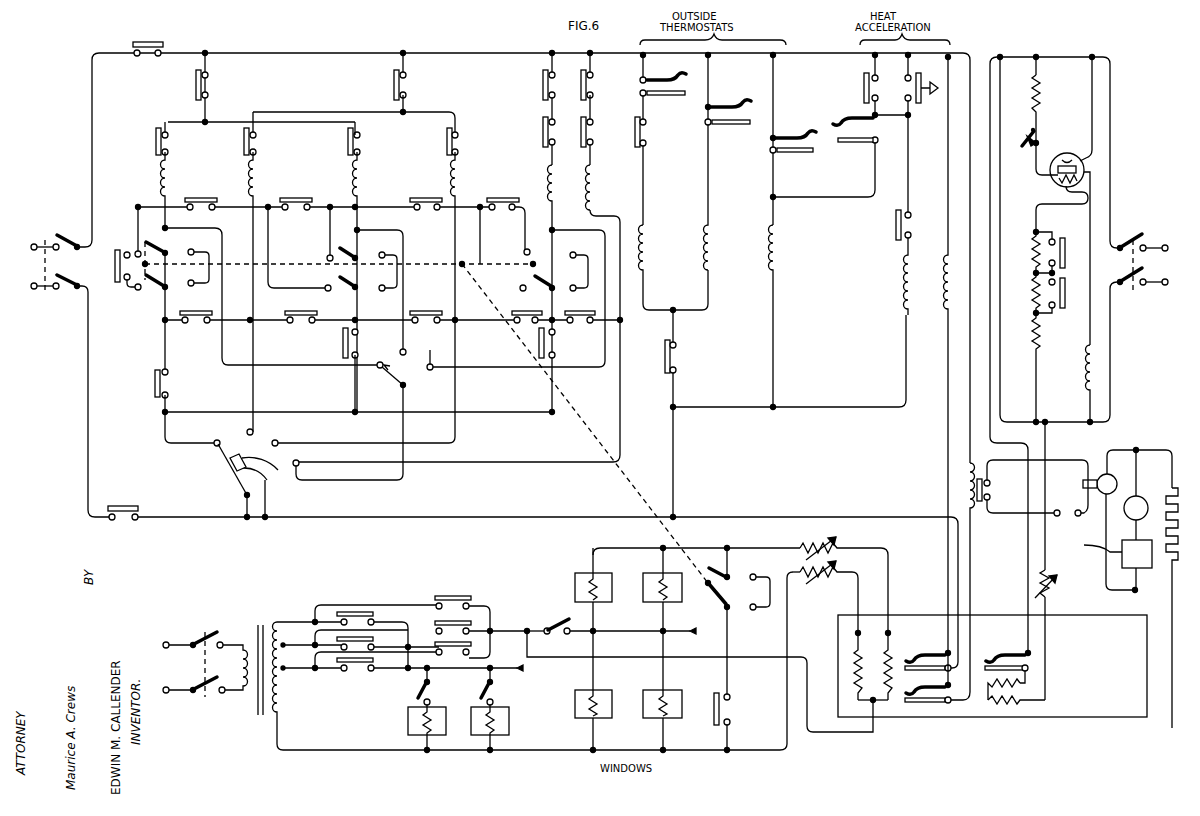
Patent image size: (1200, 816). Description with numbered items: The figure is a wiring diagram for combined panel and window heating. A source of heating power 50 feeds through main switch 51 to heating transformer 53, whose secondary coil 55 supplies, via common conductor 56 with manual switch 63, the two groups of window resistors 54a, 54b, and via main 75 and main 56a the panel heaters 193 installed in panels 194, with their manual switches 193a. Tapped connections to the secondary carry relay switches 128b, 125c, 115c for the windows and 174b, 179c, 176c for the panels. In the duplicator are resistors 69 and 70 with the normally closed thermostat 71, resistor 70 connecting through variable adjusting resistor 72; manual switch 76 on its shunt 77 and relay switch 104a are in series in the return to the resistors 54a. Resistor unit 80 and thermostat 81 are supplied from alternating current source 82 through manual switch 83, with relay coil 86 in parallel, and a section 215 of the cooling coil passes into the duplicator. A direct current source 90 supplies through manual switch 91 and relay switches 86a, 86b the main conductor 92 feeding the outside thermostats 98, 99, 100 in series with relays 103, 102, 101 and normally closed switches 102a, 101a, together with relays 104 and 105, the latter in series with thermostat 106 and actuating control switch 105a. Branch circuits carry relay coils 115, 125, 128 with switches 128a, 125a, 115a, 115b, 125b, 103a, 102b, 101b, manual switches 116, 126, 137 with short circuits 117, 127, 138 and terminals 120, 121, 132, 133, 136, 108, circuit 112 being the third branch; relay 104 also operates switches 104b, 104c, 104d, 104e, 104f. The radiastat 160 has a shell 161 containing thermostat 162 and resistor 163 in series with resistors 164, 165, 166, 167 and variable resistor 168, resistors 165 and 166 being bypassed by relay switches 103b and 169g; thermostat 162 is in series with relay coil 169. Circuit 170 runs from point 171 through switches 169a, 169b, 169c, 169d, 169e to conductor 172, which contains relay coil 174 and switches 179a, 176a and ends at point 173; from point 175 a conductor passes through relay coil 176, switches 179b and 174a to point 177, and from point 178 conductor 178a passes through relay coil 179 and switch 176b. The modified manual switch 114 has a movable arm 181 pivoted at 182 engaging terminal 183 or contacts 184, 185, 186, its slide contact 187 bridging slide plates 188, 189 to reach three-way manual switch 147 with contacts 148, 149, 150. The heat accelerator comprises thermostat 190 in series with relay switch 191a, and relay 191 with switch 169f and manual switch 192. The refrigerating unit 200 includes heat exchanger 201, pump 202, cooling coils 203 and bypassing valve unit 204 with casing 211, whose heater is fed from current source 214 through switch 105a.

The source of heating power 50 is at (178, 636).
The main switch 51 is at (216, 634).
The heating transformer 53 is at (266, 610).
The secondary coil 55 is at (277, 618).
The common conductor 56 is at (510, 630).
The panel circuit main 56a is at (434, 684).
The manual switch 63 is at (540, 628).
The resistor 69 is at (855, 668).
The resistor 70 is at (890, 648).
The fixed temperature thermostat 71 is at (938, 650).
The variable adjusting resistor 72 is at (810, 542).
The transformer main 75 is at (378, 752).
The manual switch 76 is at (722, 606).
The shunt 77 is at (760, 612).
The resistor unit 80 is at (1000, 706).
The fixed temperature thermostat 81 is at (1012, 650).
The alternating current source 82 is at (1166, 240).
The manual switch 83 is at (1136, 240).
The relay coil 86 is at (1033, 312).
The relay switch 86a is at (132, 42).
The relay switch 86b is at (108, 506).
The direct current source 90 is at (44, 238).
The manual switch 91 is at (62, 240).
The main conductor 92 is at (468, 53).
The fixed temperature thermostat 98 is at (660, 96).
The fixed temperature thermostat 99 is at (726, 134).
The fixed temperature thermostat 100 is at (784, 156).
The relay 101 is at (778, 268).
The relay switch 101a is at (664, 362).
The relay switch 101b is at (538, 318).
The relay 102 is at (714, 252).
The relay switch 102a is at (646, 134).
The relay switch 102b is at (336, 362).
The relay 103 is at (649, 252).
The relay switch 103a is at (153, 382).
The relay switch 103b is at (1080, 226).
The relay 104 is at (942, 265).
The relay switch 104a is at (712, 700).
The relay switch 104b is at (114, 262).
The relay switch 104c is at (218, 197).
The relay switch 104d is at (316, 197).
The relay switch 104e is at (438, 197).
The relay switch 104f is at (486, 198).
The relay 105 is at (962, 486).
The control switch 105a is at (978, 516).
The fixed temperature thermostat 106 is at (916, 708).
The terminal 108 is at (524, 250).
The parallel branch circuit 112 is at (553, 222).
The manual switch 114 is at (219, 469).
The relay coil 115 is at (169, 170).
The relay switch 115a is at (347, 148).
The relay switch 115b is at (542, 86).
The relay switch 115c is at (482, 658).
The manual switch 116 is at (156, 290).
The short-circuiting conductor 117 is at (205, 272).
The terminal 120 is at (145, 240).
The terminal 121 is at (135, 296).
The relay 125 is at (362, 182).
The relay switch 125a is at (156, 140).
The relay switch 125b is at (542, 143).
The relay switch 125c is at (472, 622).
The manual switch 126 is at (356, 278).
The short circuit 127 is at (381, 292).
The relay coil 128 is at (548, 176).
The relay switch 128a is at (194, 80).
The relay switch 128b is at (442, 596).
The terminal 132 is at (324, 252).
The terminal 133 is at (328, 278).
The terminal 136 is at (520, 285).
The manual switch 137 is at (546, 276).
The short circuit 138 is at (586, 246).
The three-way manual switch 147 is at (398, 388).
The contact 148 is at (382, 362).
The contact 149 is at (401, 350).
The terminal 150 is at (432, 360).
The radiastat 160 is at (1073, 145).
The shell 161 is at (1060, 156).
The fixed temperature thermostat 162 is at (1050, 165).
The resistor 163 is at (1062, 186).
The fixed resistor 164 is at (1042, 90).
The fixed resistor 165 is at (1031, 250).
The fixed resistor 166 is at (1031, 290).
The fixed resistor 167 is at (1031, 336).
The variable resistor 168 is at (1028, 130).
The relay coil 169 is at (1084, 366).
The relay switch 169a is at (181, 310).
The relay switch 169b is at (287, 310).
The relay switch 169c is at (414, 310).
The relay switch 169d is at (535, 310).
The relay switch 169e is at (580, 310).
The relay switch 169f is at (894, 221).
The relay switch 169g is at (1066, 300).
The circuit 170 is at (331, 333).
The point 171 is at (158, 326).
The conductor 172 is at (634, 210).
The point 173 is at (592, 66).
The relay coil 174 is at (596, 166).
The relay switch 174a is at (410, 80).
The relay switch 174b is at (343, 611).
The point 175 is at (252, 325).
The relay coil 176 is at (257, 186).
The relay switch 176a is at (594, 85).
The relay switch 176b is at (460, 138).
The relay switch 176c is at (364, 671).
The point 177 is at (403, 53).
The point 178 is at (457, 323).
The conductor 178a is at (454, 232).
The relay coil 179 is at (461, 180).
The relay switch 179a is at (594, 126).
The relay switch 179b is at (243, 140).
The relay switch 179c is at (370, 644).
The movable arm 181 is at (240, 492).
The pivot 182 is at (244, 508).
The terminal 183 is at (214, 438).
The contact 184 is at (252, 434).
The contact 185 is at (278, 440).
The contact 186 is at (298, 466).
The slide contact 187 is at (228, 470).
The slide plate 188 is at (266, 496).
The slide plate 189 is at (256, 458).
The thermostat 190 is at (856, 122).
The relay 191 is at (900, 290).
The relay switch 191a is at (862, 76).
The manual switch 192 is at (918, 76).
The heaters 193 is at (422, 724).
The manual switches 193a is at (430, 702).
The panels 194 is at (408, 708).
The refrigerating unit 200 is at (1120, 440).
The heat exchanger 201 is at (1140, 575).
The pump 202 is at (1146, 497).
The cooling coils 203 is at (1166, 544).
The bypassing valve unit 204 is at (1104, 455).
The casing 211 is at (1082, 484).
The current source 214 is at (1060, 518).
The cooling coil section 215 is at (1120, 718).
The window heating resistors 54a is at (572, 590).
The window heating resistors 54b is at (574, 700).